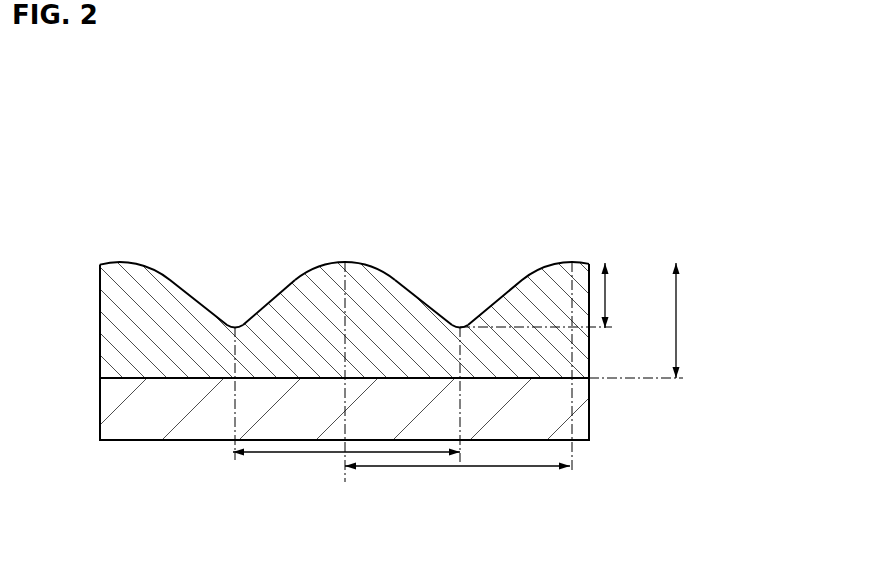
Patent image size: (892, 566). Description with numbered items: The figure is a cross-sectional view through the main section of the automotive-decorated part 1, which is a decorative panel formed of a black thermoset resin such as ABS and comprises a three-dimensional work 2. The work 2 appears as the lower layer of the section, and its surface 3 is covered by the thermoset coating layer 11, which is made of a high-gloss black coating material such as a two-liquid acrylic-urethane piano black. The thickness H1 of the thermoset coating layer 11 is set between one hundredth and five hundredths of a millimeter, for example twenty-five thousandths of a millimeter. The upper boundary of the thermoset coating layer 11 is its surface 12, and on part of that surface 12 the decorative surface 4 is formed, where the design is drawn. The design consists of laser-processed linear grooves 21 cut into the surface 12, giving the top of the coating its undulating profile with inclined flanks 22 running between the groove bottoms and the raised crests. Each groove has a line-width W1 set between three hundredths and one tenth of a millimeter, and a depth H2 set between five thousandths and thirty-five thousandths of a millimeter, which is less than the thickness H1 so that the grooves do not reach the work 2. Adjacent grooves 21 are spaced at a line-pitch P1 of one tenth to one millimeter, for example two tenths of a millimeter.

The automotive-decorated part 1 is at (66, 155).
The thermoset coating layer 11 is at (118, 322).
The work 2 is at (590, 402).
The surface 3 is at (160, 376).
The inclined surface 22 is at (286, 288).
The decorative surface 4 is at (330, 228).
The surface 12 is at (342, 262).
The laser-processed linear grooves 21 is at (450, 323).
The thickness H1 is at (680, 320).
The depth H2 is at (608, 290).
The line-pitch P1 is at (297, 453).
The line-width W1 is at (458, 467).